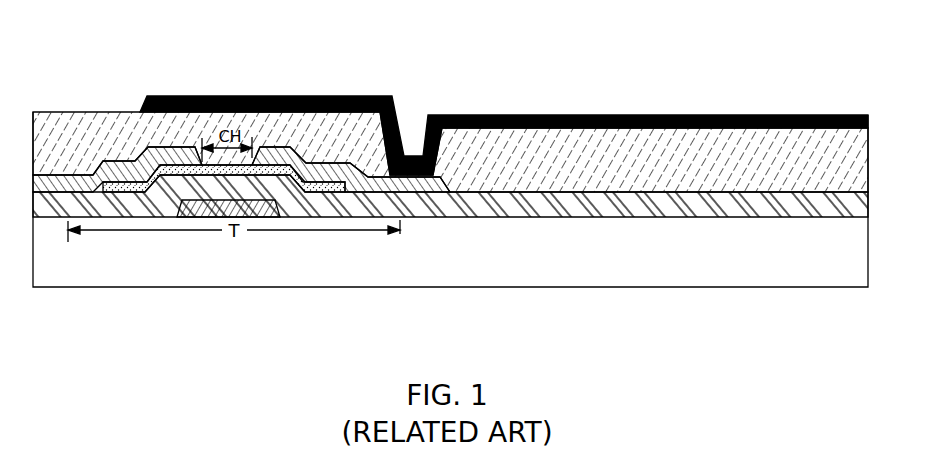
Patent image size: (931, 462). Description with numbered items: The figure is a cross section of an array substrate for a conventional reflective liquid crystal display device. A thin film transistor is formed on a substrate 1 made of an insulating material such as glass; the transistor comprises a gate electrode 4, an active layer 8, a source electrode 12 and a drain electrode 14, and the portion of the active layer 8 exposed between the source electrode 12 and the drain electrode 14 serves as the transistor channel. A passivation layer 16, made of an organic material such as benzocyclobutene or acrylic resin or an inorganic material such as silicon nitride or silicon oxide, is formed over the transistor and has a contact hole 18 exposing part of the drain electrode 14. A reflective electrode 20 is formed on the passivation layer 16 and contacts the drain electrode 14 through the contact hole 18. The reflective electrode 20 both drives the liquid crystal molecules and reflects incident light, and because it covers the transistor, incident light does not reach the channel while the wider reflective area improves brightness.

The substrate 1 is at (447, 264).
The gate electrode 4 is at (212, 217).
The active layer 8 is at (283, 173).
The source electrode 12 is at (102, 157).
The drain electrode 14 is at (338, 160).
The passivation layer 16 is at (503, 130).
The contact hole 18 is at (409, 128).
The reflective electrode 20 is at (663, 112).